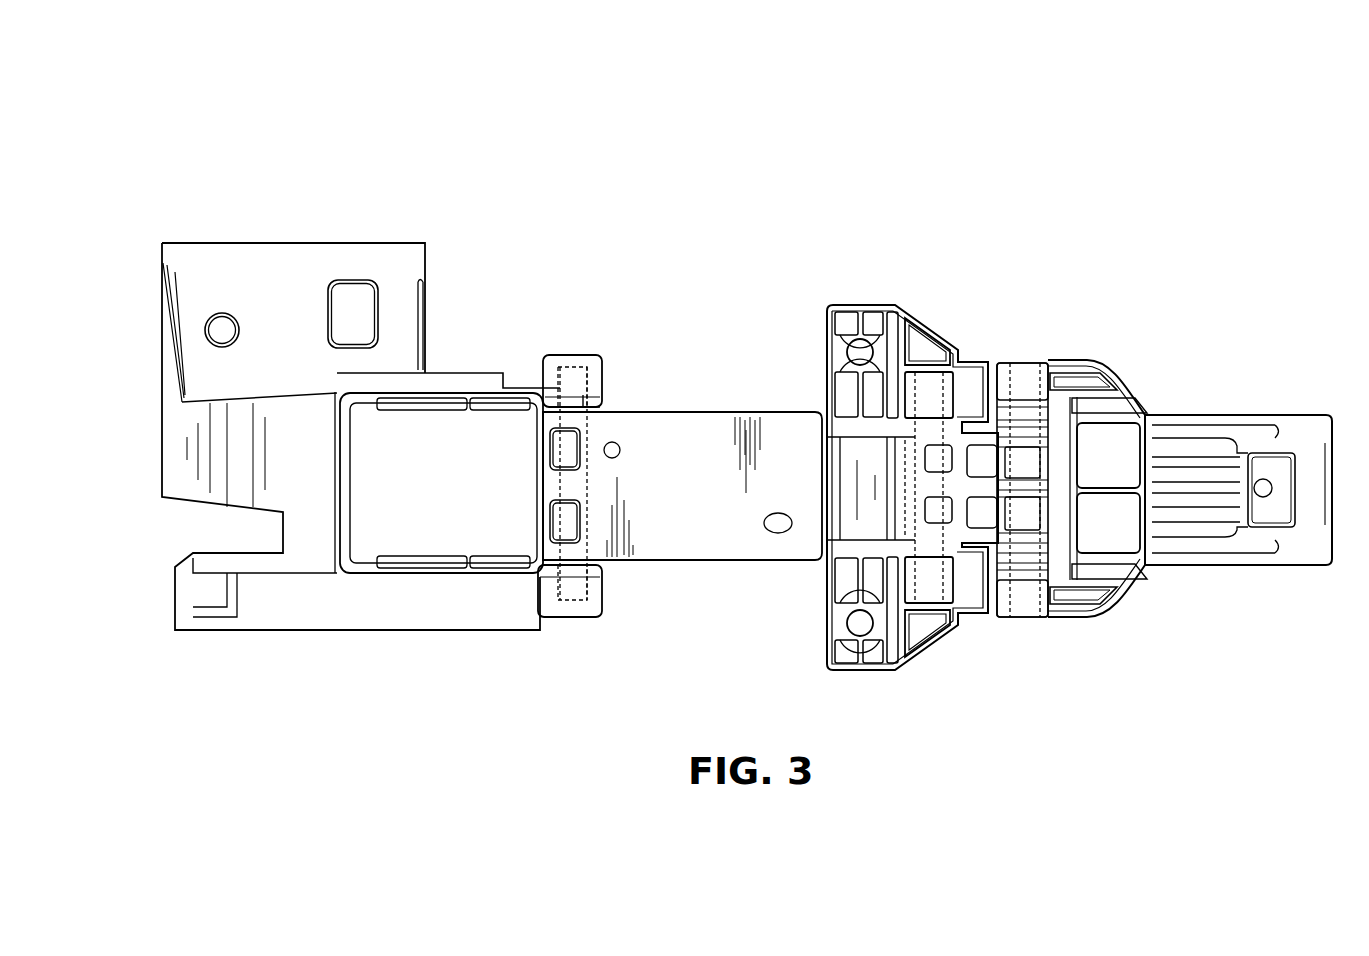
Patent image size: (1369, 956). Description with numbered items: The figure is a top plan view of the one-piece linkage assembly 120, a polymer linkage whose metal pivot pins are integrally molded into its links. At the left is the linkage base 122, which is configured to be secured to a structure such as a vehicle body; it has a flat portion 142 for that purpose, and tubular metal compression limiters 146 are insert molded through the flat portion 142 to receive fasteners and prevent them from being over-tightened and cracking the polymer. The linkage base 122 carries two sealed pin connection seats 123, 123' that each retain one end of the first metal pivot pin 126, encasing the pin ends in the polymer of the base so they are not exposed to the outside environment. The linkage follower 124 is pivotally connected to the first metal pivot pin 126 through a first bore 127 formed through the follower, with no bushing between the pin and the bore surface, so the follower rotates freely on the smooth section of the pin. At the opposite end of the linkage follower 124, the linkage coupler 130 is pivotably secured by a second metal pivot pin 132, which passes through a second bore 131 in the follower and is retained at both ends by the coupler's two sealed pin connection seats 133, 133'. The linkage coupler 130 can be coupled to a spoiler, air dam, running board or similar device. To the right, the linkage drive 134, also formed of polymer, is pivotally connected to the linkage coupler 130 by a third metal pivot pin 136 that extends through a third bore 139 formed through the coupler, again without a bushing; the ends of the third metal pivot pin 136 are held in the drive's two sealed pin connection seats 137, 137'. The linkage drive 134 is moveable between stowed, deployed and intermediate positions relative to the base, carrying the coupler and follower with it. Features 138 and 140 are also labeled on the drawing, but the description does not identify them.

The one-piece linkage assembly 120 is at (246, 140).
The linkage base 122 is at (220, 234).
The sealed pin connection seat 123 is at (609, 346).
The sealed pin connection seat 123' is at (591, 629).
The linkage follower 124 is at (698, 432).
The first metal pivot pin 126 is at (585, 407).
The first bore 127 is at (593, 437).
The linkage coupler 130 is at (951, 322).
The second bore 131 is at (905, 500).
The second metal pivot pin 132 is at (933, 430).
The sealed pin connection seat 133 is at (967, 408).
The sealed pin connection seat 133' is at (946, 620).
The linkage drive 134 is at (1208, 412).
The third metal pivot pin 136 is at (1020, 392).
The sealed pin connection seat 137 is at (1042, 327).
The sealed pin connection seat 137' is at (1037, 632).
The triangular cutout 138 is at (920, 343).
The third bore 139 is at (1080, 380).
The mounting hole 140 is at (860, 347).
The flat portion 142 is at (402, 257).
The compression limiter 146 is at (220, 327).